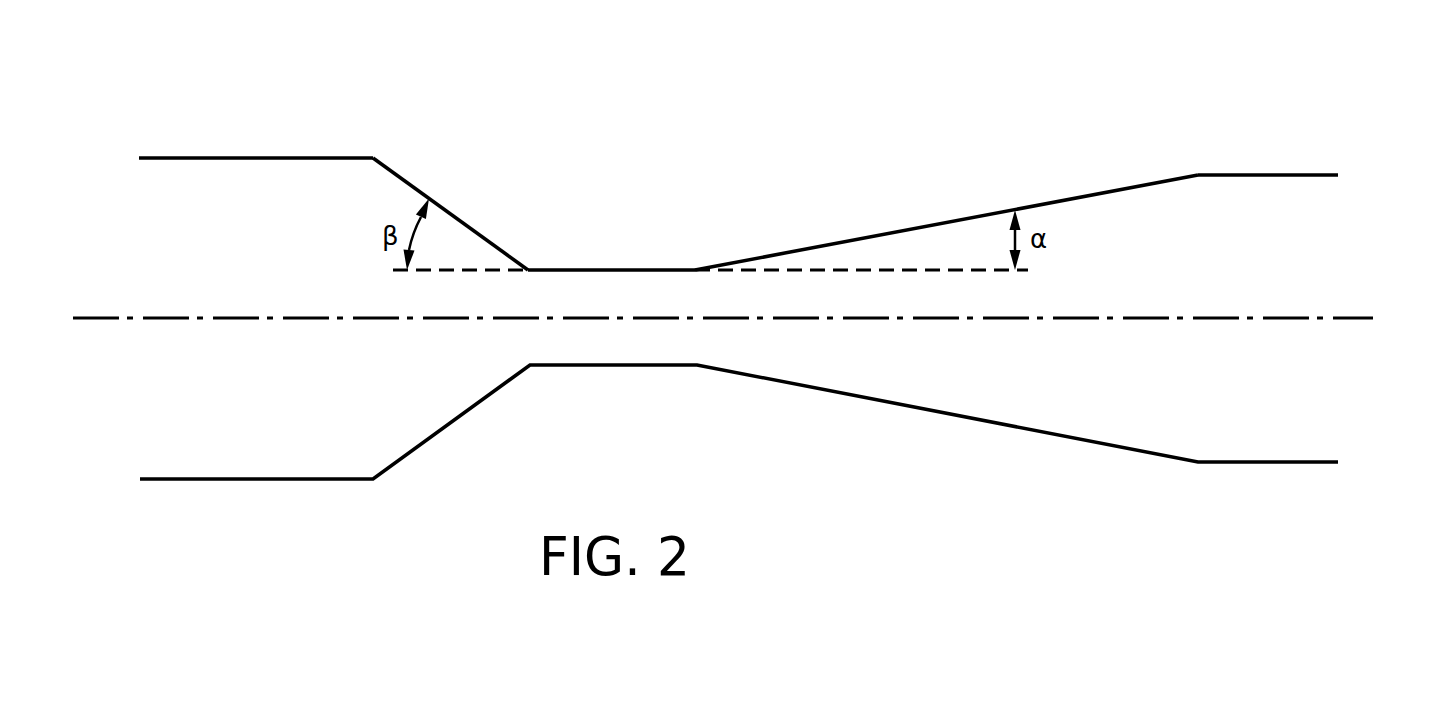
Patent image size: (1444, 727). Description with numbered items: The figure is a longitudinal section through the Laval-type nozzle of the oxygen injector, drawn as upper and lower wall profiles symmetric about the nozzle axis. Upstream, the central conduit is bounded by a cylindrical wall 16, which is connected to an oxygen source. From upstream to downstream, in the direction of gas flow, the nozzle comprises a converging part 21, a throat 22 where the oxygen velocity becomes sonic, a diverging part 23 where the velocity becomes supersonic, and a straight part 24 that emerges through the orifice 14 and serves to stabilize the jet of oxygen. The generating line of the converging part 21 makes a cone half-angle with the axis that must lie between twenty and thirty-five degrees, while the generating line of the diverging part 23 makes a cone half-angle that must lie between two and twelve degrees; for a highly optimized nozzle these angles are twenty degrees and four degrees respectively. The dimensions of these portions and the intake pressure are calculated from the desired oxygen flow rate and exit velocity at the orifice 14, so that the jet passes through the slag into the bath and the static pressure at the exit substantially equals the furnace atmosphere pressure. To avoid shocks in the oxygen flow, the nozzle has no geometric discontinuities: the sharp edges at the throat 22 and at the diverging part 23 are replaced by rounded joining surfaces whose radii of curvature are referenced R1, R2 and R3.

The orifice 14 is at (1293, 380).
The cylindrical wall 16 is at (233, 157).
The converging part 21 is at (404, 180).
The throat 22 is at (607, 268).
The diverging part 23 is at (840, 243).
The straight part 24 is at (1243, 174).
The radius of curvature R1 is at (530, 268).
The radius of curvature R2 is at (695, 268).
The radius of curvature R3 is at (1195, 182).